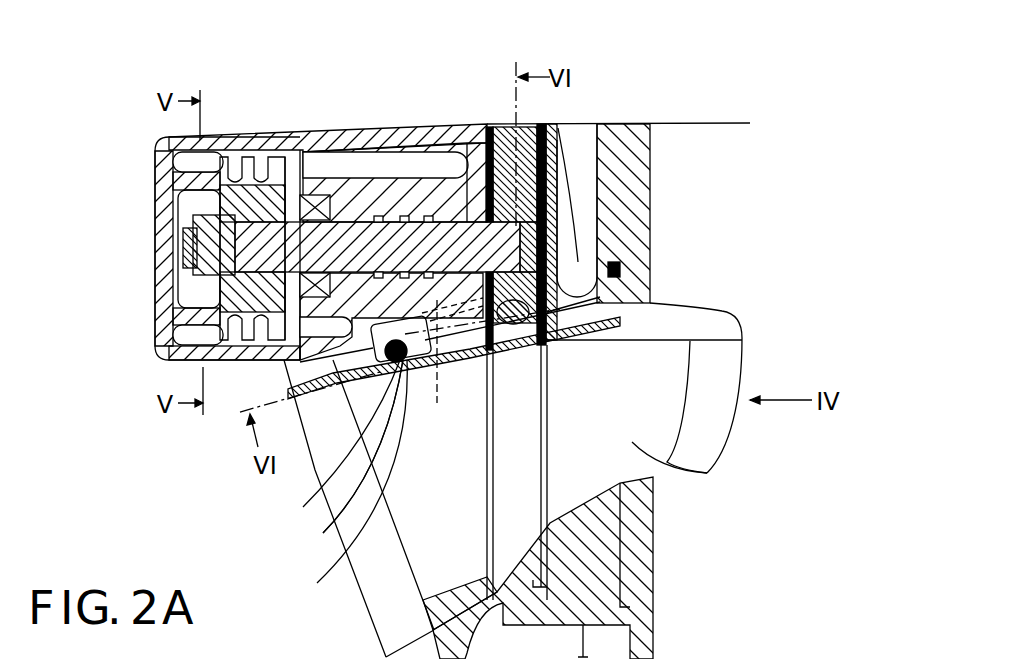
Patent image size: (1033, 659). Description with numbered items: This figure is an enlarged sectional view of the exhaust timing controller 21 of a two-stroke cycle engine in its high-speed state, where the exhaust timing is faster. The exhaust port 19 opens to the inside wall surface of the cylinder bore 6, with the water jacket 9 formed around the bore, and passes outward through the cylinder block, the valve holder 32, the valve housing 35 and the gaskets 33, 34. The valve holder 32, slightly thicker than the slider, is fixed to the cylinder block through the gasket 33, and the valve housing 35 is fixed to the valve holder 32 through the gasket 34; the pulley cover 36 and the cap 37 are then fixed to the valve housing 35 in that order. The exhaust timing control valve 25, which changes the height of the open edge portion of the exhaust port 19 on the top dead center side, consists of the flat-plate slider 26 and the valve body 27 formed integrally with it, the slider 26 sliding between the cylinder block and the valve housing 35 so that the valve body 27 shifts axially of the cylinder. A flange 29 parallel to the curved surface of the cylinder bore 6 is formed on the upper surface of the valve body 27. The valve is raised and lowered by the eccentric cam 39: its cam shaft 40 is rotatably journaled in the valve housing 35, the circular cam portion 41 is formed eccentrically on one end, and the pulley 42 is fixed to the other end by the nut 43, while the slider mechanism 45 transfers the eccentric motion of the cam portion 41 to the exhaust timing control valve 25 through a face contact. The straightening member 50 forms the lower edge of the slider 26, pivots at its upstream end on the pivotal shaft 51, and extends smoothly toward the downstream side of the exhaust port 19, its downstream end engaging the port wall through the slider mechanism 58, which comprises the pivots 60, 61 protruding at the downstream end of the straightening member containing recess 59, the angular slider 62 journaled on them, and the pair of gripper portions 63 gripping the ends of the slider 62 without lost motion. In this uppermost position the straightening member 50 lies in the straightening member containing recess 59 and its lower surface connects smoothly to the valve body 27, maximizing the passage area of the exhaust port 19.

The cylinder bore 6 is at (657, 170).
The water jacket 9 is at (583, 203).
The exhaust port 19 is at (707, 473).
The exhaust timing controller 21 is at (447, 66).
The exhaust timing control valve 25 is at (515, 448).
The slider 26 is at (570, 332).
The valve body 27 is at (612, 338).
The flange 29 is at (607, 300).
The valve holder 32 is at (501, 124).
The gasket 33 is at (563, 128).
The gasket 34 is at (465, 125).
The valve housing 35 is at (430, 126).
The pulley cover 36 is at (280, 137).
The cap 37 is at (155, 248).
The eccentric cam 39 is at (391, 196).
The cam shaft 40 is at (340, 218).
The cam portion 41 is at (465, 203).
The pulley 42 is at (256, 150).
The nut 43 is at (190, 222).
The slider mechanism 45 is at (607, 135).
The straightening member 50 is at (468, 367).
The pivotal shaft 51 is at (516, 345).
The slider mechanism 58 is at (328, 508).
The straightening member containing recess 59 is at (420, 365).
The pivot 60 is at (334, 464).
The pivot 61 is at (323, 533).
The slider 62 is at (264, 510).
The gripper portions 63 is at (336, 447).